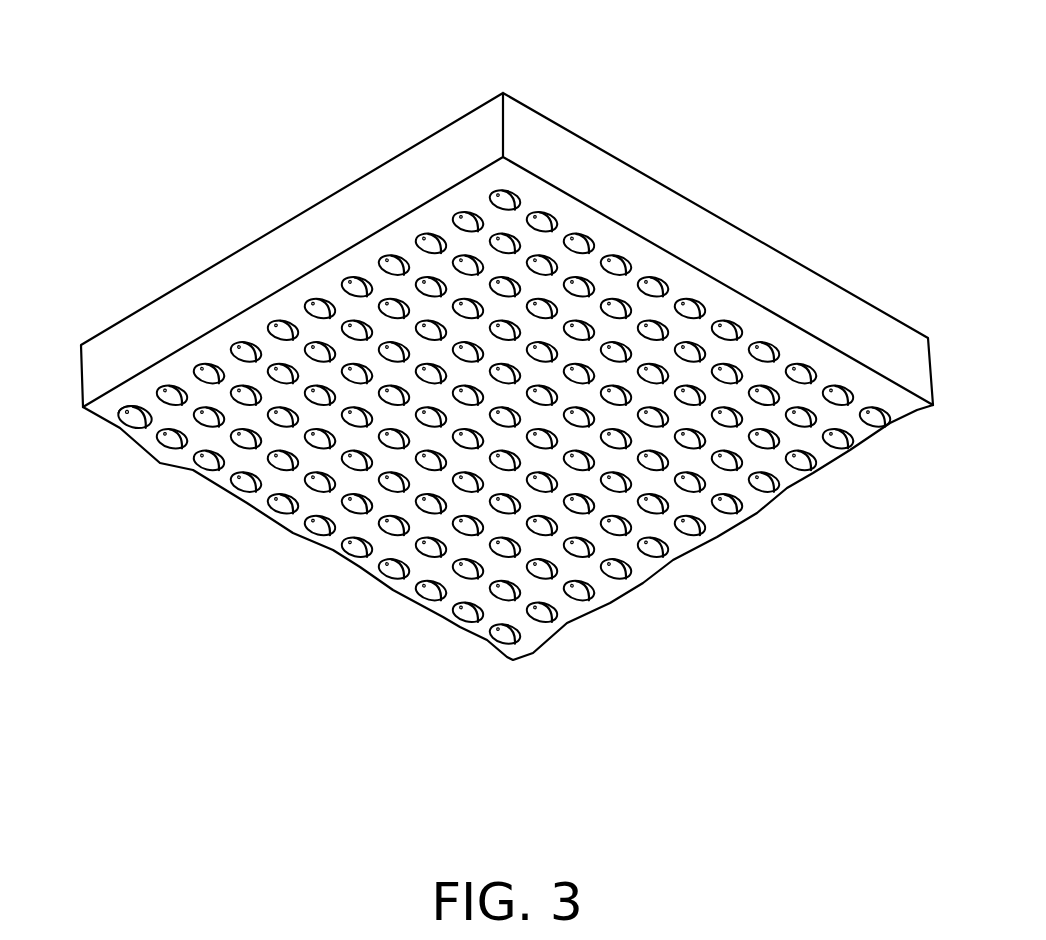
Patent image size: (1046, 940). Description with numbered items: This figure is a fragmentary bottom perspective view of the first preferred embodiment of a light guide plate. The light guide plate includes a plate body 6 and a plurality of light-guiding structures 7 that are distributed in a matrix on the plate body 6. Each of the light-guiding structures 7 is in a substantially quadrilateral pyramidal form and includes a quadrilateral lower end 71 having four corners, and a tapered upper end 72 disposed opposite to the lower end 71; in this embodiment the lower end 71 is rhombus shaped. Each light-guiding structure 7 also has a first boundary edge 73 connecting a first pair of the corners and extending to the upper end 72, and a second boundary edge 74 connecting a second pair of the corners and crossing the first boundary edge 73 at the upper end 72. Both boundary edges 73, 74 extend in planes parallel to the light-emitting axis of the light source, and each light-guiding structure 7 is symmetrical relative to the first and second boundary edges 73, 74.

The plate body 6 is at (437, 173).
The light-guiding structures 7 is at (520, 180).
The quadrilateral lower end 71 is at (135, 432).
The tapered upper end 72 is at (132, 411).
The first boundary edge 73 is at (143, 433).
The second boundary edge 74 is at (120, 420).